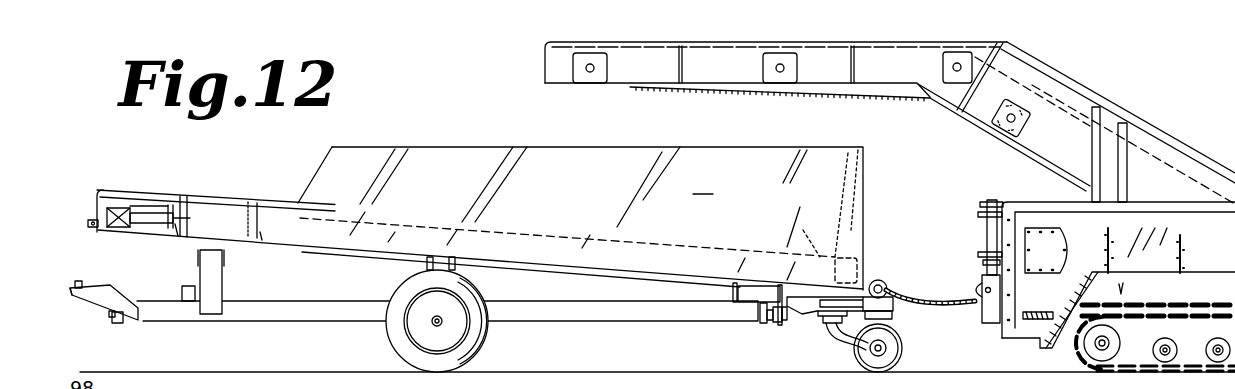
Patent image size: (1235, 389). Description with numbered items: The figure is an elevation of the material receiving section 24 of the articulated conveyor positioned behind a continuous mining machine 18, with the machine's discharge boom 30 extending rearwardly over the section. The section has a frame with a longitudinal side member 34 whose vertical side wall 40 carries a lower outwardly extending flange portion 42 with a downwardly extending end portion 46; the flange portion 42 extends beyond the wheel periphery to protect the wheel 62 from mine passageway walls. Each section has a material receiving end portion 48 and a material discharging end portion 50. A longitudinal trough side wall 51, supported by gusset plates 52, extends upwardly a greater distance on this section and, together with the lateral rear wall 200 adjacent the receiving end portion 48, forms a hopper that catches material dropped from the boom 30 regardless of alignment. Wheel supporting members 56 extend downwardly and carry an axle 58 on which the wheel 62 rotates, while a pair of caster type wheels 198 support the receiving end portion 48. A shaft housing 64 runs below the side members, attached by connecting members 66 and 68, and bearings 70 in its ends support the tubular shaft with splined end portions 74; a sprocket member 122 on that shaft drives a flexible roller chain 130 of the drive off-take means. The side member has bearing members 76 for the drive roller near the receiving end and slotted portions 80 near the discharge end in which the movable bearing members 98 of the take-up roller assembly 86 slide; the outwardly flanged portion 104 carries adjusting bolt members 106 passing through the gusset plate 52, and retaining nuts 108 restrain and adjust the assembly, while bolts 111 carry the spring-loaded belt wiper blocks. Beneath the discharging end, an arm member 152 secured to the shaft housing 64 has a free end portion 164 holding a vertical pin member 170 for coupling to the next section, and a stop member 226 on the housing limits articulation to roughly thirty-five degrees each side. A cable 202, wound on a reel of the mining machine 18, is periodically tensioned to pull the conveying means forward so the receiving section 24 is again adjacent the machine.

The continuous mining machine 18 is at (1185, 112).
The material receiving section 24 is at (392, 138).
The discharge boom 30 is at (720, 78).
The longitudinal side member 34 is at (240, 188).
The vertical side wall 40 is at (272, 223).
The lower outwardly extending flange portion 42 is at (308, 254).
The downwardly extending end portion 46 is at (280, 248).
The material receiving end portion 48 is at (804, 231).
The material discharging end portion 50 is at (89, 183).
The longitudinal trough side wall 51 is at (703, 183).
The gusset plates 52 is at (177, 233).
The wheel supporting members 56 is at (463, 272).
The axle 58 is at (442, 320).
The wheel 62 is at (473, 353).
The shaft housing 64 is at (548, 316).
The connecting member 66 is at (225, 275).
The connecting member 68 is at (732, 293).
The bearings 70 is at (117, 323).
The splined end portions 74 is at (112, 316).
The bearing members 76 is at (858, 270).
The slotted portions 80 is at (147, 211).
The take-up roller assembly 86 is at (128, 212).
The movable bearing members 98 is at (108, 208).
The outwardly flanged portion 104 is at (137, 230).
The adjusting bolt members 106 is at (185, 216).
The retaining nuts 108 is at (170, 205).
The bolts 111 is at (85, 222).
The sprocket member 122 is at (778, 322).
The flexible roller chain 130 is at (787, 313).
The arm member 152 is at (67, 275).
The free end portion 164 is at (63, 305).
The vertical pin member 170 is at (82, 281).
The caster type wheels 198 is at (833, 323).
The lateral rear wall 200 is at (855, 195).
The cable 202 is at (948, 303).
The stop member 226 is at (185, 302).